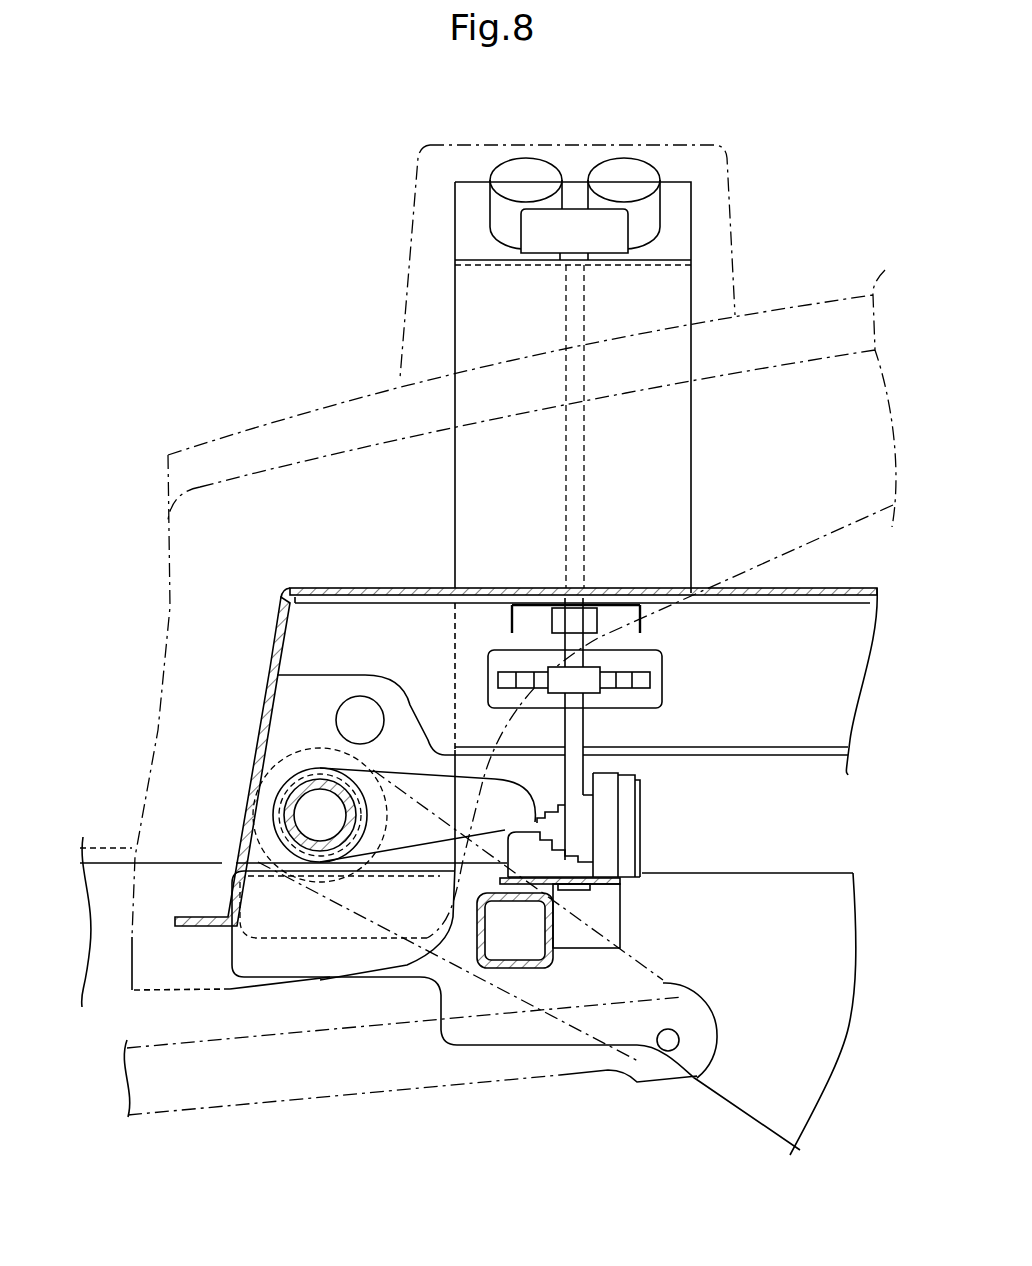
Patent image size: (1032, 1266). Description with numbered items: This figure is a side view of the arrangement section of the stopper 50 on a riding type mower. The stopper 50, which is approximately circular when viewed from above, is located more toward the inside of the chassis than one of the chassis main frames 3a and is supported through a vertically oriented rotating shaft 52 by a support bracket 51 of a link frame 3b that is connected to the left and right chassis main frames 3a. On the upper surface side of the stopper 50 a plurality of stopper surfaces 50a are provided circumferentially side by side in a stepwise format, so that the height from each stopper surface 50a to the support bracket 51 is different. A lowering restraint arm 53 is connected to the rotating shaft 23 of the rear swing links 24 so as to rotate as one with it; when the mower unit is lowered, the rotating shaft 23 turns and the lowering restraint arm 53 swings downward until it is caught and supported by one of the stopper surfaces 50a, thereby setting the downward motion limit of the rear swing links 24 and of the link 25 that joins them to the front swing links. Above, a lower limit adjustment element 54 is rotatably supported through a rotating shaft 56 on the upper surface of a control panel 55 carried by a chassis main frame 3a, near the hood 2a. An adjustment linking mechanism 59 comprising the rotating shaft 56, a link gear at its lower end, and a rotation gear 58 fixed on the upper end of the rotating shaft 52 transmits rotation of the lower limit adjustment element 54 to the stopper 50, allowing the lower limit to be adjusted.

The hood 2a is at (260, 427).
The chassis main frame 3a is at (118, 858).
The link frame 3b is at (545, 968).
The rotating shaft 23 is at (290, 795).
The rear swing link 24 is at (663, 980).
The link 25 is at (378, 1087).
The stopper 50 is at (659, 812).
The stopper surface 50a is at (545, 815).
The support bracket 51 is at (620, 918).
The rotating shaft 52 is at (583, 728).
The lowering restraint arm 53 is at (398, 770).
The lower limit adjustment element 54 is at (620, 237).
The control panel 55 is at (455, 308).
The rotating shaft 56 is at (584, 450).
The rotation gear 58 is at (650, 678).
The adjustment linking mechanism 59 is at (695, 663).